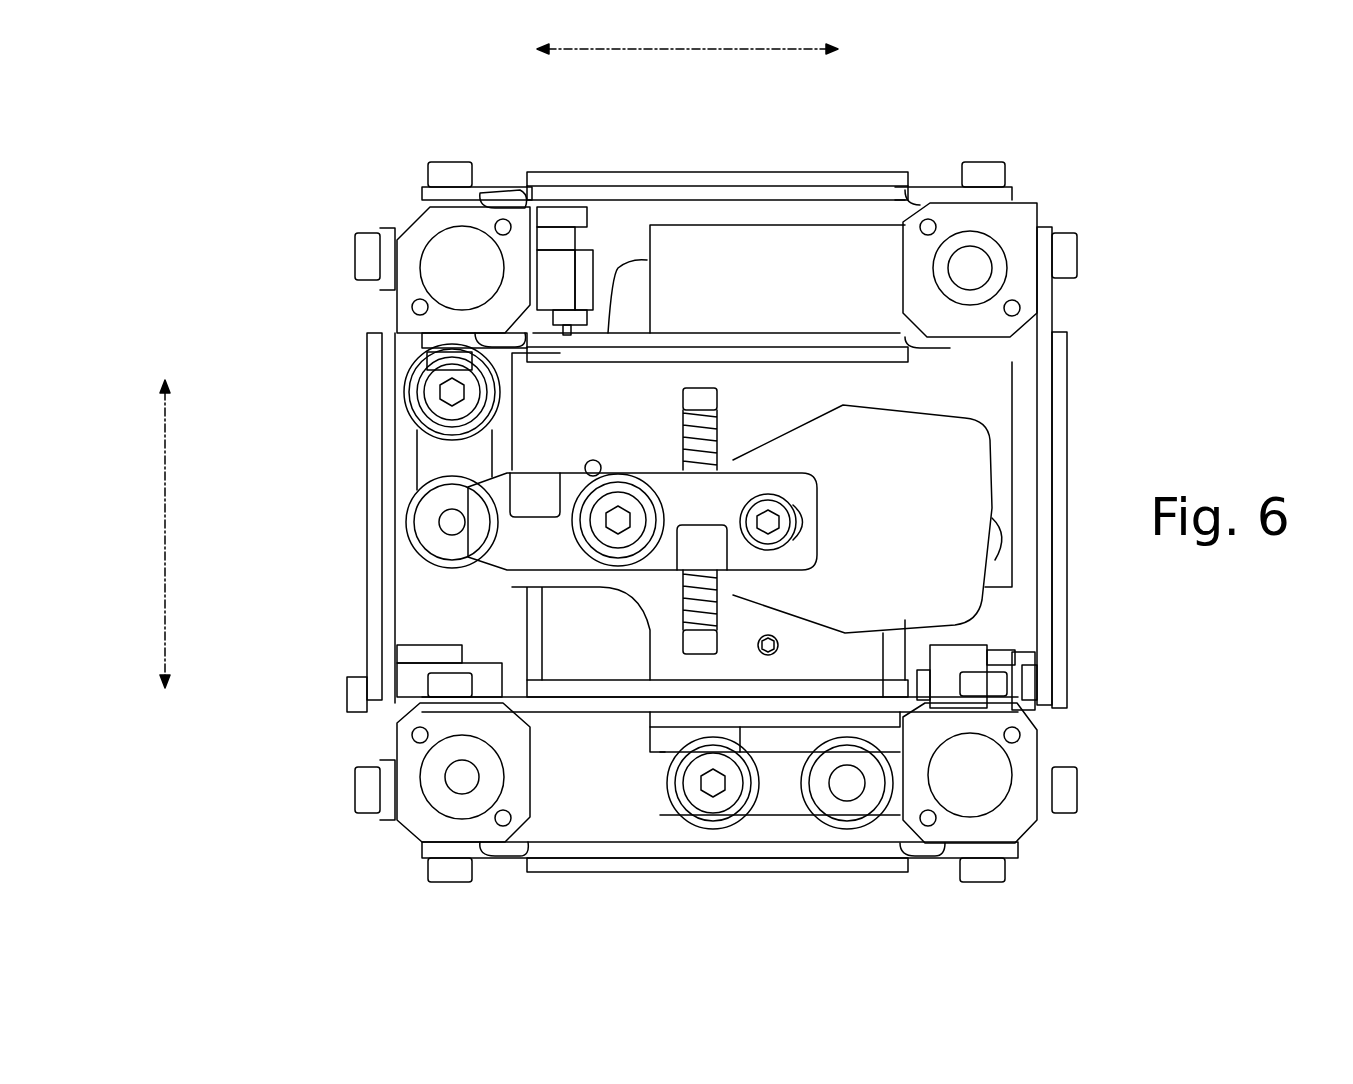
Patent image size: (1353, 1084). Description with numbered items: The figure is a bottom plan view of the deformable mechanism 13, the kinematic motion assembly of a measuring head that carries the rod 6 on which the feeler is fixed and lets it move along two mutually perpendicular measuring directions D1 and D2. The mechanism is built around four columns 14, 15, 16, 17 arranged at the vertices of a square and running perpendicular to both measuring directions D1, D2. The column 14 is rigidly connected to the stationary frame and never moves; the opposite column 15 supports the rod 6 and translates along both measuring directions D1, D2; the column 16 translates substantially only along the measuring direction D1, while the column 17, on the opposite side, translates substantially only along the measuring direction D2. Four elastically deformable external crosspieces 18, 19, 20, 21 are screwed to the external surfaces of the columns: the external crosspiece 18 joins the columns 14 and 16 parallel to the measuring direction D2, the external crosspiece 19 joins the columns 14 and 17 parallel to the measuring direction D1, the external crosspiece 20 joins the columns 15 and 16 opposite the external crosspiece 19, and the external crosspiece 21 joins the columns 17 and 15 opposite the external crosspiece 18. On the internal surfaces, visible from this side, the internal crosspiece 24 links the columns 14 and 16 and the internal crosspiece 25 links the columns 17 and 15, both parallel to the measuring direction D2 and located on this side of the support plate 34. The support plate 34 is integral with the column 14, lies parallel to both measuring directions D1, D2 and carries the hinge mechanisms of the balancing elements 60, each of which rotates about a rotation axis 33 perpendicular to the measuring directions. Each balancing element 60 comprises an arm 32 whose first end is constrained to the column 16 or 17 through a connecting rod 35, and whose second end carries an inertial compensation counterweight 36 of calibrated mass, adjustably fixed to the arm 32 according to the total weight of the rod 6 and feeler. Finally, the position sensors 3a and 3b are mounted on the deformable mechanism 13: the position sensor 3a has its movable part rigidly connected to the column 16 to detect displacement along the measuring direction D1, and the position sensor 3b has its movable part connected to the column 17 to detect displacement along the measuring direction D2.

The deformable mechanism 13 is at (1178, 843).
The column 14 is at (952, 218).
The column 15 is at (413, 820).
The column 16 is at (414, 232).
The column 17 is at (1017, 816).
The external crosspiece 18 is at (613, 184).
The external crosspiece 19 is at (1057, 620).
The external crosspiece 20 is at (378, 498).
The external crosspiece 21 is at (644, 860).
The internal crosspiece 24 is at (705, 347).
The internal crosspiece 25 is at (583, 712).
The arm 32 is at (552, 545).
The rotation axis 33 is at (618, 520).
The support plate 34 is at (823, 388).
The connecting rod 35 is at (447, 453).
The inertial compensation counterweight 36 is at (945, 508).
The balancing element 60 is at (740, 422).
The rod 6 is at (357, 694).
The position sensor 3a is at (535, 327).
The position sensor 3b is at (912, 700).
The measuring direction D1 is at (163, 450).
The measuring direction D2 is at (699, 58).